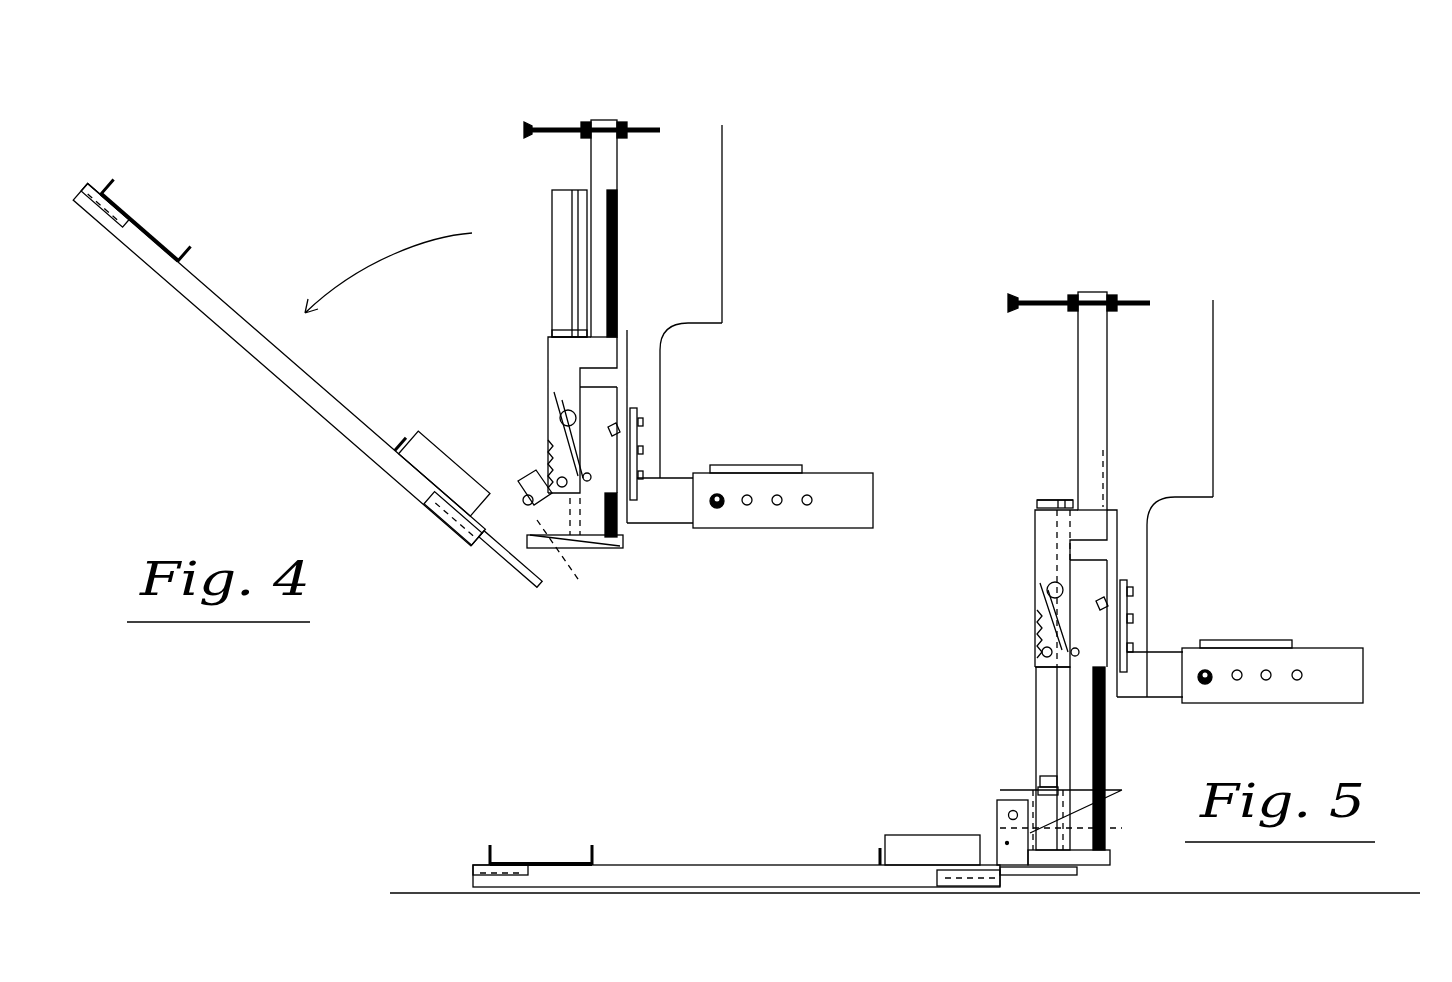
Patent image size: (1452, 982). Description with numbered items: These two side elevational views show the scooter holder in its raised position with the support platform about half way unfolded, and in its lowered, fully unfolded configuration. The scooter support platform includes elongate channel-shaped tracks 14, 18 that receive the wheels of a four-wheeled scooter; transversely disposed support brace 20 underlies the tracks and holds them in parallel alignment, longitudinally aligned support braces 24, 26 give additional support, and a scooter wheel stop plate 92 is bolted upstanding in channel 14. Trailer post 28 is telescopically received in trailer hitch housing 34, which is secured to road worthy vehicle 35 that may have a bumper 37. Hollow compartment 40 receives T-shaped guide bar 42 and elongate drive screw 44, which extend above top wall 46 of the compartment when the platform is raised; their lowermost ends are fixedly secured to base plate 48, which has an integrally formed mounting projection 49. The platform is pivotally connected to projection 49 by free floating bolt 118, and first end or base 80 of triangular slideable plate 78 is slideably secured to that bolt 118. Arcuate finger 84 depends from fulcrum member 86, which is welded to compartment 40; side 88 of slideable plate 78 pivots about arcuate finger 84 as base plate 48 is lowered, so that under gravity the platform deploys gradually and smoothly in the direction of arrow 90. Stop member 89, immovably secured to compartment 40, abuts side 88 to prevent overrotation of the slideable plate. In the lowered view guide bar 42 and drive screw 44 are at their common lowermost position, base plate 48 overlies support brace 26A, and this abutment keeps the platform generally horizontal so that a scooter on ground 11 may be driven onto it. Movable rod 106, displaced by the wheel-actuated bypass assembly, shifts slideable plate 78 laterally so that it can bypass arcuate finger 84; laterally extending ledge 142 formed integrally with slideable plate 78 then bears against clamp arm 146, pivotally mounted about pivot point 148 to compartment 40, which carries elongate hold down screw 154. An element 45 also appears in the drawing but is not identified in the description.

In FIG. 5, the ground 11 is at (1235, 893).
In FIG. 4, the channel-shaped track 14 is at (408, 438).
In FIG. 5, the channel-shaped track 14 is at (880, 848).
In FIG. 4, the channel-shaped track 18 is at (192, 258).
In FIG. 5, the channel-shaped track 18 is at (490, 848).
In FIG. 4, the support brace 20 is at (260, 367).
In FIG. 5, the support brace 20 is at (665, 862).
In FIG. 4, the support brace 24 is at (112, 232).
In FIG. 5, the support brace 24 is at (497, 873).
In FIG. 4, the support brace 26 is at (447, 517).
In FIG. 5, the support brace 26 is at (978, 887).
In FIG. 4, the support brace 26A is at (532, 576).
In FIG. 5, the support brace 26A is at (1065, 875).
In FIG. 4, the trailer post 28 is at (680, 478).
In FIG. 5, the trailer post 28 is at (1166, 652).
In FIG. 4, the trailer hitch housing 34 is at (840, 528).
In FIG. 5, the trailer hitch housing 34 is at (1335, 692).
In FIG. 4, the road worthy vehicle 35 is at (722, 200).
In FIG. 5, the road worthy vehicle 35 is at (1213, 372).
In FIG. 4, the bumper 37 is at (705, 322).
In FIG. 5, the bumper 37 is at (1190, 497).
In FIG. 4, the compartment 40 is at (549, 350).
In FIG. 5, the compartment 40 is at (1037, 540).
In FIG. 4, the T-shaped guide bar 42 is at (556, 208).
In FIG. 5, the T-shaped guide bar 42 is at (1038, 725).
In FIG. 4, the drive screw 44 is at (607, 276).
In FIG. 5, the drive screw 44 is at (1108, 748).
In FIG. 4, the plate 45 is at (643, 420).
In FIG. 5, the plate 45 is at (1127, 592).
In FIG. 4, the top wall 46 is at (563, 335).
In FIG. 5, the top wall 46 is at (1065, 500).
In FIG. 4, the base plate 48 is at (590, 545).
In FIG. 5, the base plate 48 is at (1112, 857).
In FIG. 4, the mounting projection 49 is at (548, 525).
In FIG. 5, the mounting projection 49 is at (1120, 828).
In FIG. 5, the slideable plate 78 is at (1105, 790).
In FIG. 4, the base of slideable plate 80 is at (545, 480).
In FIG. 5, the base of slideable plate 80 is at (997, 800).
In FIG. 5, the arcuate finger 84 is at (1042, 660).
In FIG. 4, the fulcrum member 86 is at (555, 450).
In FIG. 5, the fulcrum member 86 is at (1040, 617).
In FIG. 4, the side of slideable plate 88 is at (600, 540).
In FIG. 4, the stop member 89 is at (650, 440).
In FIG. 5, the stop member 89 is at (1135, 612).
In FIG. 4, the arrow 90 is at (405, 247).
In FIG. 4, the scooter wheel stop plate 92 is at (432, 468).
In FIG. 5, the scooter wheel stop plate 92 is at (930, 840).
In FIG. 5, the movable rod 106 is at (1007, 843).
In FIG. 4, the free floating bolt 118 is at (493, 543).
In FIG. 5, the free floating bolt 118 is at (1012, 808).
In FIG. 5, the laterally extending ledge 142 is at (1045, 785).
In FIG. 4, the clamp arm 146 is at (619, 169).
In FIG. 5, the clamp arm 146 is at (1108, 343).
In FIG. 4, the pivot point 148 is at (563, 405).
In FIG. 5, the pivot point 148 is at (1040, 582).
In FIG. 4, the hold down screw 154 is at (568, 123).
In FIG. 5, the hold down screw 154 is at (1050, 298).